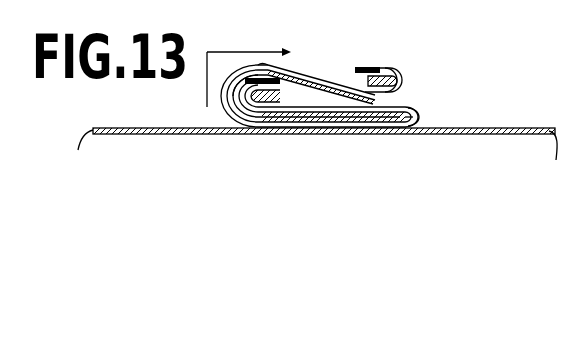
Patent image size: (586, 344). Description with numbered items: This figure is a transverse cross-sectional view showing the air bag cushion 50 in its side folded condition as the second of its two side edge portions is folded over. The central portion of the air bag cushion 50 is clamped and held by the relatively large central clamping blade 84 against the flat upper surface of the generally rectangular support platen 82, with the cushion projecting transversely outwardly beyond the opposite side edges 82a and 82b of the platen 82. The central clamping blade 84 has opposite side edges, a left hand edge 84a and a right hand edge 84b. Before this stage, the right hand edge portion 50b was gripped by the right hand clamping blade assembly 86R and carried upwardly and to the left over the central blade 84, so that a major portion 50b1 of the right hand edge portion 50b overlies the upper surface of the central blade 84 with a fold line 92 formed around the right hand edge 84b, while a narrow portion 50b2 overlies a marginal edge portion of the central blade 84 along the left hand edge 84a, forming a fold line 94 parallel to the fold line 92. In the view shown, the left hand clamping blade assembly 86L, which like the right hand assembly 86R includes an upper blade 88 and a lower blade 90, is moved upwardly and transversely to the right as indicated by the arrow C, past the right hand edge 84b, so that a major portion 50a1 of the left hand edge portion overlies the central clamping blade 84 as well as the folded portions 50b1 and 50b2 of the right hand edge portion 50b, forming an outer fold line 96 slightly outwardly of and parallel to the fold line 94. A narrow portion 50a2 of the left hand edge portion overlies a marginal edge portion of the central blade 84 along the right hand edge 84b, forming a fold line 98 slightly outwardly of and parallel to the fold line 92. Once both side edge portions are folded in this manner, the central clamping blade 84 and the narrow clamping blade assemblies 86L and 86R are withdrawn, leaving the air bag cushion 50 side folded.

The arrow C is at (207, 52).
The air bag cushion 50 is at (210, 128).
The major portion of left hand edge portion 50a1 is at (303, 66).
The narrow portion of left hand edge portion 50a2 is at (363, 66).
The right hand edge portion 50b is at (424, 107).
The major portion of right hand edge portion 50b1 is at (403, 97).
The narrow portion of right hand edge portion 50b2 is at (273, 96).
The support platen 82 is at (349, 136).
The side edge of platen 82a is at (84, 152).
The side edge of platen 82b is at (565, 156).
The central clamping blade 84 is at (310, 70).
The left hand edge of central clamping blade 84a is at (248, 122).
The right hand edge of central clamping blade 84b is at (410, 127).
The right hand clamping blade assembly 86R is at (258, 64).
The left hand clamping blade assembly 86L is at (385, 56).
The upper blade 88 is at (262, 82).
The lower blade 90 is at (328, 78).
The fold line 92 is at (420, 115).
The fold line 94 is at (233, 105).
The outer fold line 96 is at (222, 100).
The fold line 98 is at (404, 80).